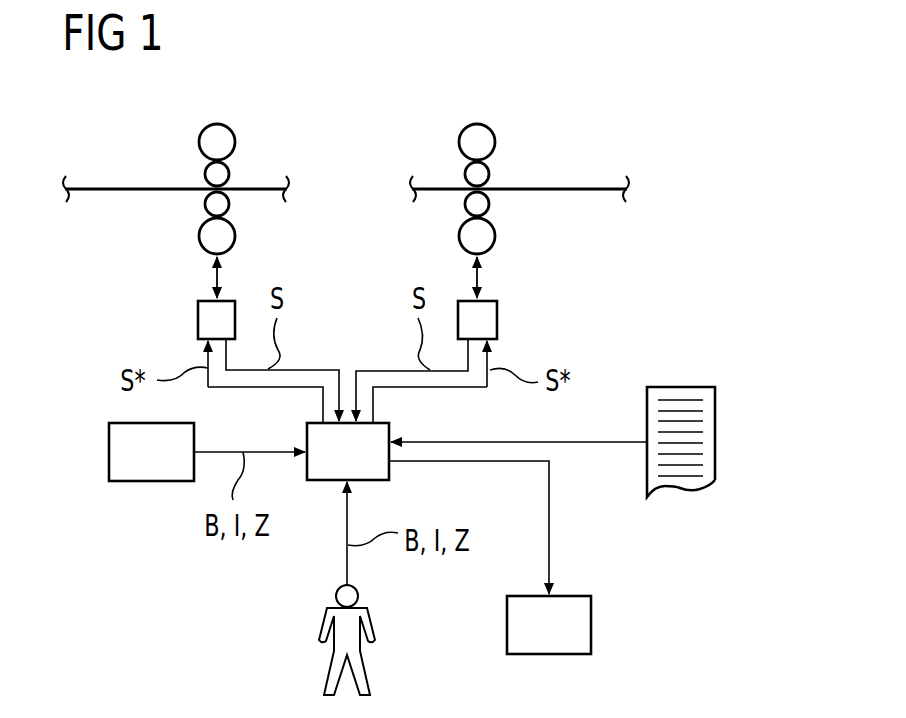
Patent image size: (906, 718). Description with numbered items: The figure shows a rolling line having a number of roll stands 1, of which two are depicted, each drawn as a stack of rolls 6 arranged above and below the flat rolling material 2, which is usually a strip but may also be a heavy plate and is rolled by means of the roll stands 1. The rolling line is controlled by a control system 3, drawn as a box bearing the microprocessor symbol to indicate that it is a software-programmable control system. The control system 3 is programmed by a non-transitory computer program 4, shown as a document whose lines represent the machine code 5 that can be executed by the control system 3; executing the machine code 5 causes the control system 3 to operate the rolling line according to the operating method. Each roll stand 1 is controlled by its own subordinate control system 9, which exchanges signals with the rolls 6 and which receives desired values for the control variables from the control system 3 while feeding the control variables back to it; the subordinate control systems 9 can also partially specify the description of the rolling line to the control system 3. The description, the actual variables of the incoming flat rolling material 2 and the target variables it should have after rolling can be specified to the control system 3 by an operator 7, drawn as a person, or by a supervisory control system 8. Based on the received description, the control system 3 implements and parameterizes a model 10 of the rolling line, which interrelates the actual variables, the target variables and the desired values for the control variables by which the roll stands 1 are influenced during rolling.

The roll stand 1 is at (265, 108).
The flat rolling material 2 is at (104, 187).
The control system 3 is at (317, 480).
The computer program 4 is at (680, 488).
The machine code 5 is at (697, 428).
The rolls 6 is at (205, 174).
The operator 7 is at (330, 672).
The supervisory control system 8 is at (153, 481).
The subordinate control system 9 is at (198, 318).
The model 10 is at (507, 624).